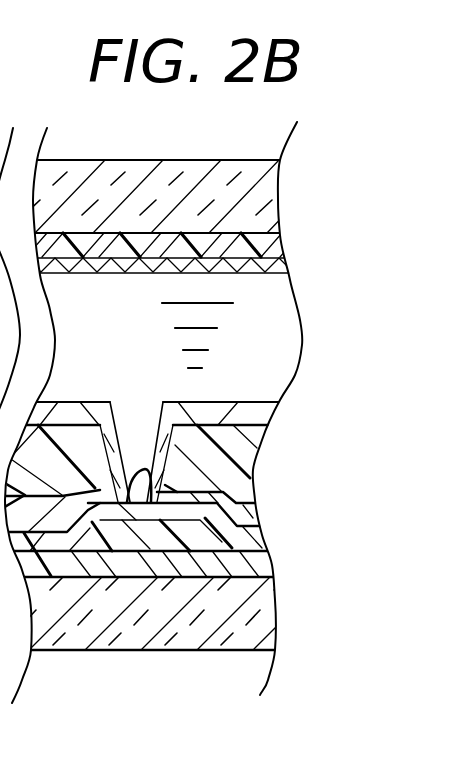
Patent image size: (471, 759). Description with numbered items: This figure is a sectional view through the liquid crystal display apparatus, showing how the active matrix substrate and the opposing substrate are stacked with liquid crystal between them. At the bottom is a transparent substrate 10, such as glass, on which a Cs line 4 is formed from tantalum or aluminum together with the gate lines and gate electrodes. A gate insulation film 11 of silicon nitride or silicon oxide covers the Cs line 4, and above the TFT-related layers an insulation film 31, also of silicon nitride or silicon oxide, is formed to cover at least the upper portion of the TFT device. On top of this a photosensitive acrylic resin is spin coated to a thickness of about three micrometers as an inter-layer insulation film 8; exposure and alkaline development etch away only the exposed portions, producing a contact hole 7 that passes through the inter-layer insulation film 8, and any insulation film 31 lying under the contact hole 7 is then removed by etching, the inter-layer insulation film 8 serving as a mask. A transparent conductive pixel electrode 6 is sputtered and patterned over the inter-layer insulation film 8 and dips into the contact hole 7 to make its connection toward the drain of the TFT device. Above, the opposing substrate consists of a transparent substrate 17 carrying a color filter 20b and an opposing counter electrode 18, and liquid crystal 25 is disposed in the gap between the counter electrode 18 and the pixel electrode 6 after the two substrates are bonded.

The transparent substrate 17 is at (276, 200).
The color filter 20b is at (272, 245).
The opposing counter electrode 18 is at (272, 268).
The liquid crystal 25 is at (242, 352).
The pixel electrode 6 is at (243, 415).
The inter-layer insulation film 8 is at (233, 482).
The insulation film 31 is at (247, 523).
The gate insulation film 11 is at (257, 563).
The transparent substrate 10 is at (250, 632).
The contact hole 7 is at (122, 506).
The Cs line 4 is at (191, 505).